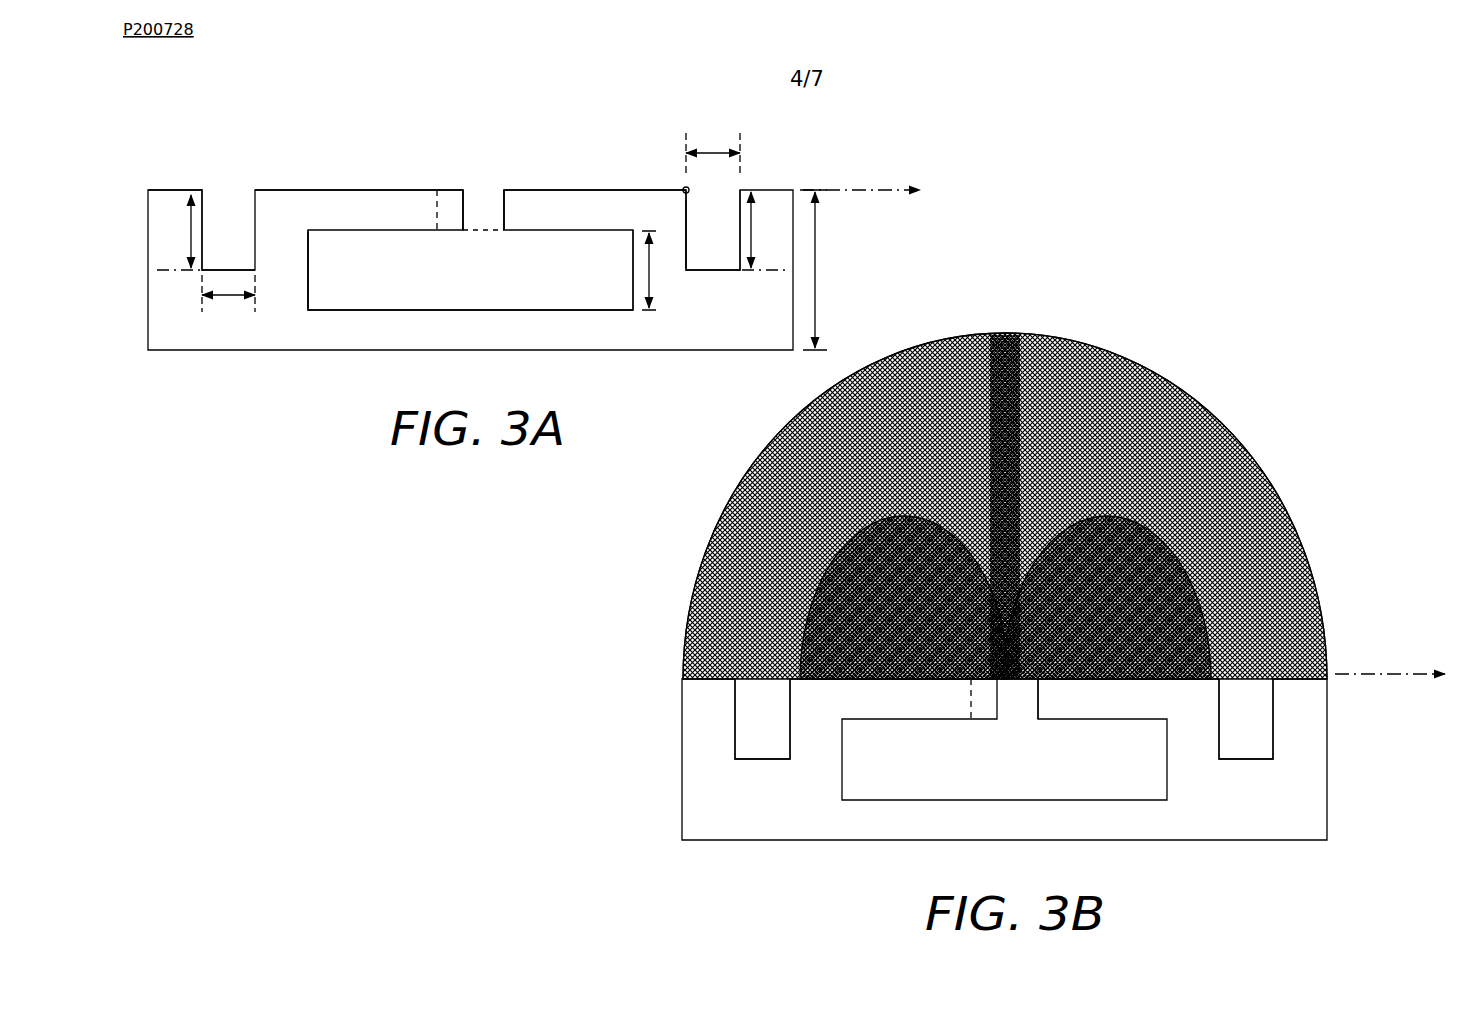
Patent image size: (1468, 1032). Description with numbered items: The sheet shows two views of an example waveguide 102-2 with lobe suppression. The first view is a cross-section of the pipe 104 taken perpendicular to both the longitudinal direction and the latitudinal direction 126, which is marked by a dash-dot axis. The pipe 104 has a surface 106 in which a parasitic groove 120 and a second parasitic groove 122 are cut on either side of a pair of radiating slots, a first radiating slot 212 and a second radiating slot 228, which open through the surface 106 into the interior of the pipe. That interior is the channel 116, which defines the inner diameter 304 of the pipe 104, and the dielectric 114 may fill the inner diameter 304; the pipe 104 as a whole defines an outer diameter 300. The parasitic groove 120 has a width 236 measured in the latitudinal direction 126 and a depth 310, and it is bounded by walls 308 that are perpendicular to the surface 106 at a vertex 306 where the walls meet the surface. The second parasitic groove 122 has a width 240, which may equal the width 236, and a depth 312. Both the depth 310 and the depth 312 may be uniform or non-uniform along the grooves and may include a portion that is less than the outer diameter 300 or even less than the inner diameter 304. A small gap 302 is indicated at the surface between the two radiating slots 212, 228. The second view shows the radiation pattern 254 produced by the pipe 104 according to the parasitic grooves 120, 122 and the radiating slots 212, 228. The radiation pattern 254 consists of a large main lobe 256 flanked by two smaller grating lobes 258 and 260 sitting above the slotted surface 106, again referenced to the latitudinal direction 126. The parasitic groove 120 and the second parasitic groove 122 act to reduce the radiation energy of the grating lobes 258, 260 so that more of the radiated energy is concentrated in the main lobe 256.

In FIG. 3A, the waveguide 102-2 is at (172, 100).
In FIG. 3A, the pipe 104 is at (372, 186).
In FIG. 3B, the pipe 104 is at (684, 672).
In FIG. 3A, the surface 106 is at (425, 190).
In FIG. 3A, the dielectric 114 is at (527, 302).
In FIG. 3A, the channel 116 is at (306, 280).
In FIG. 3A, the parasitic groove 120 is at (716, 276).
In FIG. 3B, the parasitic groove 120 is at (1240, 778).
In FIG. 3A, the second parasitic groove 122 is at (233, 186).
In FIG. 3B, the second parasitic groove 122 is at (778, 776).
In FIG. 3A, the latitudinal direction 126 is at (856, 188).
In FIG. 3B, the latitudinal direction 126 is at (1380, 674).
In FIG. 3A, the first radiating slot 212 is at (437, 228).
In FIG. 3B, the first radiating slot 212 is at (971, 718).
In FIG. 3A, the second radiating slot 228 is at (494, 240).
In FIG. 3B, the second radiating slot 228 is at (1030, 731).
In FIG. 3A, the width 236 is at (705, 152).
In FIG. 3A, the width 240 is at (232, 296).
In FIG. 3B, the radiation pattern 254 is at (1155, 350).
In FIG. 3B, the main lobe 256 is at (1005, 506).
In FIG. 3B, the grating lobe 258 is at (1107, 597).
In FIG. 3B, the grating lobe 260 is at (904, 597).
In FIG. 3A, the outer diameter 300 is at (818, 246).
In FIG. 3A, the gap 302 is at (478, 228).
In FIG. 3A, the inner diameter 304 is at (652, 298).
In FIG. 3A, the vertex 306 is at (686, 188).
In FIG. 3A, the walls 308 is at (686, 232).
In FIG. 3A, the depth 310 is at (751, 256).
In FIG. 3A, the depth 312 is at (191, 252).